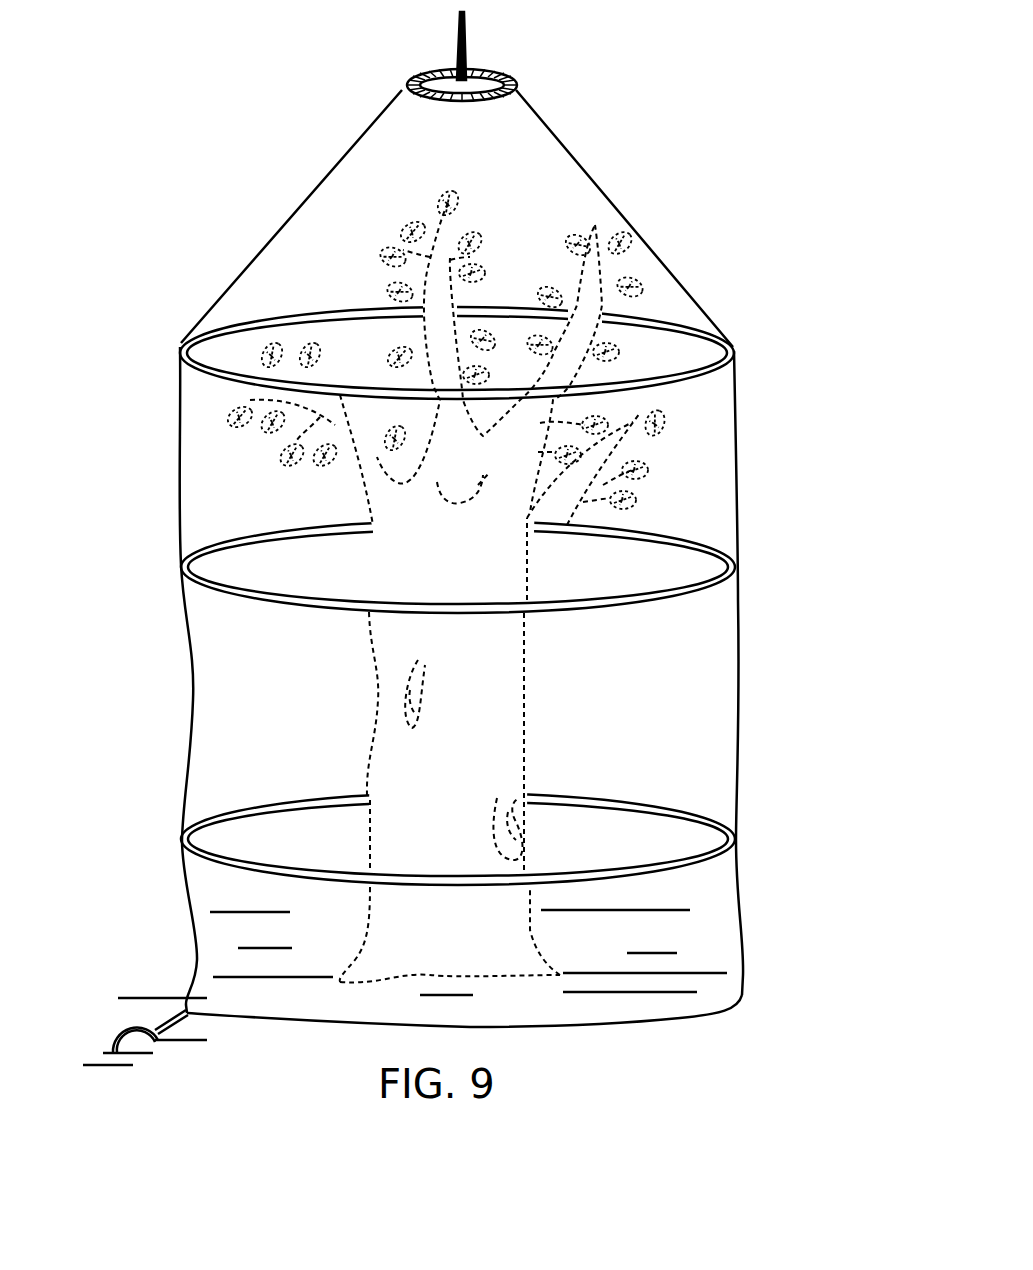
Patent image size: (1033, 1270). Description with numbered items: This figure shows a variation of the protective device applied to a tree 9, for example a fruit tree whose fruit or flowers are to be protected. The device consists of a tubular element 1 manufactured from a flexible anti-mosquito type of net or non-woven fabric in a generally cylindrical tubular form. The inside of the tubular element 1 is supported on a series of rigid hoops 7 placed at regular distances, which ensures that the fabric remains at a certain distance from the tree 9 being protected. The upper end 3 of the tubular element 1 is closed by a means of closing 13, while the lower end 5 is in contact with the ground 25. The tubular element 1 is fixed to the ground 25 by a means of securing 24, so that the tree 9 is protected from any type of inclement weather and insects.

The means of closing 13 is at (465, 30).
The upper end 3 is at (517, 82).
The tree 9 is at (597, 278).
The rigid hoops 7 is at (732, 352).
The tubular element 1 is at (738, 718).
The means of securing 24 is at (134, 1027).
The ground 25 is at (327, 1061).
The lower end 5 is at (635, 1024).